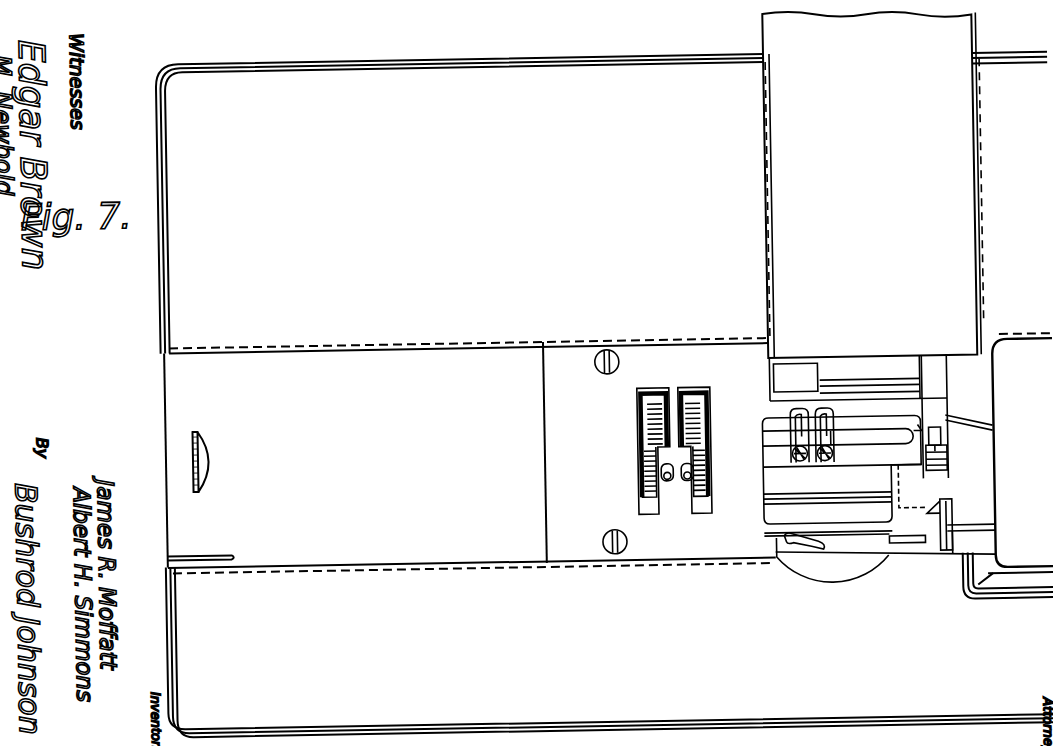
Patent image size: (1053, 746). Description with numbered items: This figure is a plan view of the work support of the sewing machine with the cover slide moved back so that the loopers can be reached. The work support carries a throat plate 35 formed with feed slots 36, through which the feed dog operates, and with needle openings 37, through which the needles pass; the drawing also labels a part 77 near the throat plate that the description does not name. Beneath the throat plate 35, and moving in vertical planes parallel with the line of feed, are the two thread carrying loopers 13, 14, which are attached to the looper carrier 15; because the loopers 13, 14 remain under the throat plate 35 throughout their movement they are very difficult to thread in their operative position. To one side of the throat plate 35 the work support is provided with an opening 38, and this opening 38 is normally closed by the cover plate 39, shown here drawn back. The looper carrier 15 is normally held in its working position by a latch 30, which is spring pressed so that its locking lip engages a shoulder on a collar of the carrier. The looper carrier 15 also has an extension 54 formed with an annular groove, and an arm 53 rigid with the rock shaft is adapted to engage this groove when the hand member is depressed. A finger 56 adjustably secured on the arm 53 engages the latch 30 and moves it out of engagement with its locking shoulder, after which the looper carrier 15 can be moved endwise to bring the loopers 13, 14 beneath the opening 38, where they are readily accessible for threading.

The cover plate 39 is at (808, 164).
The throat plate 35 is at (556, 460).
The thread carrying looper 14 is at (790, 415).
The thread carrying looper 13 is at (832, 418).
The feed slots 36 is at (650, 508).
The contact springs 77 is at (693, 407).
The needle openings 37 is at (658, 473).
The looper carrier 15 is at (917, 433).
The arm 53 is at (936, 440).
The extension 54 is at (948, 463).
The finger 56 is at (946, 537).
The latch 30 is at (793, 553).
The opening 38 is at (851, 561).